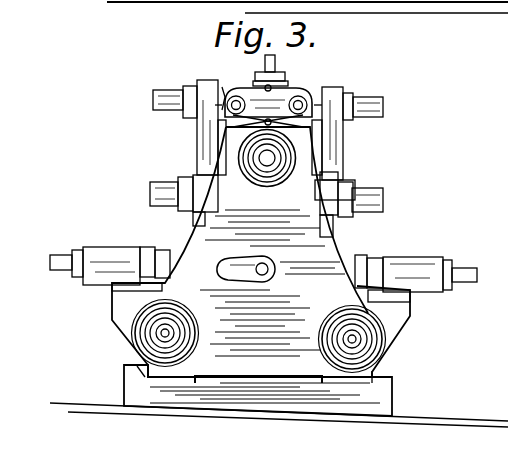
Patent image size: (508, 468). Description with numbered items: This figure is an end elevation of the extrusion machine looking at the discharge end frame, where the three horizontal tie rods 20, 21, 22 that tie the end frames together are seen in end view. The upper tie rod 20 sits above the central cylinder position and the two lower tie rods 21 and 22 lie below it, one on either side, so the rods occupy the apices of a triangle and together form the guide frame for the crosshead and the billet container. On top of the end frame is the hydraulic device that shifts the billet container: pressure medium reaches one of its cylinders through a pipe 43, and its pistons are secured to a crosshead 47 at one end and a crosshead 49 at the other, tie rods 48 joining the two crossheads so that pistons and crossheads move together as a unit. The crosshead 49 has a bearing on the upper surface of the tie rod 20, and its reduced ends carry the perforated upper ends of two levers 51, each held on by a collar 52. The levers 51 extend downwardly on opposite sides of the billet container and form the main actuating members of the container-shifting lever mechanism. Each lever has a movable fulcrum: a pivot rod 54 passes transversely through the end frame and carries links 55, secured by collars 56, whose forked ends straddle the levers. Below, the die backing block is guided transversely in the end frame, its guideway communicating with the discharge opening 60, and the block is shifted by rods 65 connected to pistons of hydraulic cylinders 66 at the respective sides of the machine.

The tie rod 20 is at (262, 172).
The tie rod 21 is at (172, 327).
The tie rod 22 is at (350, 322).
The pipe 43 is at (276, 65).
The crosshead 47 is at (283, 99).
The rods 48 is at (212, 118).
The crosshead 49 is at (228, 94).
The levers 51 is at (332, 140).
The collar 52 is at (354, 96).
The pivot rod 54 is at (375, 200).
The links 55 is at (330, 188).
The collars 56 is at (345, 220).
The opening 60 is at (252, 258).
The rods 65 is at (165, 250).
The hydraulic cylinders 66 is at (101, 258).